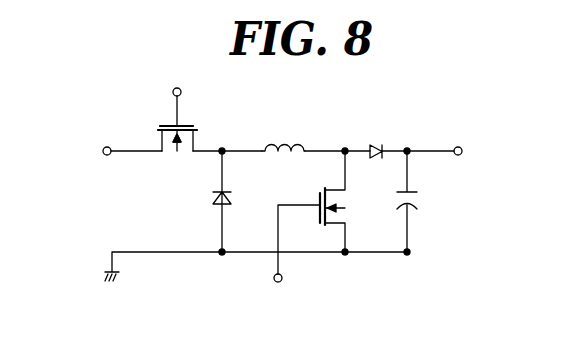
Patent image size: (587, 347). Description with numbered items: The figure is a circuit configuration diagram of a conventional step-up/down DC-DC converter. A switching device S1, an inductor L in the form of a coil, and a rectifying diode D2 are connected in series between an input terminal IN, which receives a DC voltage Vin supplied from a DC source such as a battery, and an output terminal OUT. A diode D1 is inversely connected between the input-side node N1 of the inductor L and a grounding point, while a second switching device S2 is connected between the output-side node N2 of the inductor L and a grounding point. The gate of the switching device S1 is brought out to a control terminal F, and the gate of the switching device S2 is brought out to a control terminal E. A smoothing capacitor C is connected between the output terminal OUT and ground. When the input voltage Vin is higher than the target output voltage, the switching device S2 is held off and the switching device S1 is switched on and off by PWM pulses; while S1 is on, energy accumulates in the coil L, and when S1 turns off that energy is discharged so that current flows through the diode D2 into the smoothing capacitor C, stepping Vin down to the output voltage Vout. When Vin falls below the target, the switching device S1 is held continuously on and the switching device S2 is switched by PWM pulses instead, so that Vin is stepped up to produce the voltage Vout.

The DC voltage Vin is at (69, 154).
The input terminal IN is at (110, 139).
The switching device S1 is at (172, 123).
The first control terminal F is at (178, 81).
The node N1 is at (223, 147).
The inductor L is at (283, 135).
The node N2 is at (343, 147).
The rectifying diode D2 is at (380, 140).
The output terminal OUT is at (460, 140).
The voltage Vout is at (492, 161).
The diode D1 is at (205, 203).
The switching device S2 is at (313, 212).
The second control terminal E is at (277, 292).
The smoothing capacitor C is at (419, 201).